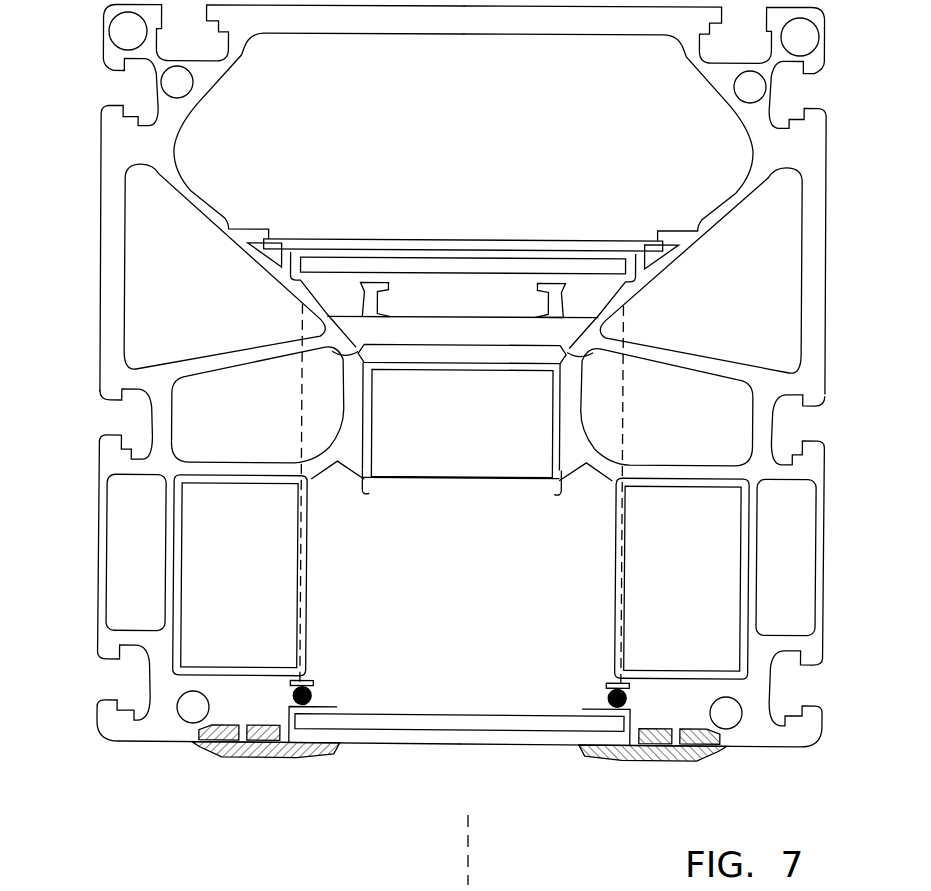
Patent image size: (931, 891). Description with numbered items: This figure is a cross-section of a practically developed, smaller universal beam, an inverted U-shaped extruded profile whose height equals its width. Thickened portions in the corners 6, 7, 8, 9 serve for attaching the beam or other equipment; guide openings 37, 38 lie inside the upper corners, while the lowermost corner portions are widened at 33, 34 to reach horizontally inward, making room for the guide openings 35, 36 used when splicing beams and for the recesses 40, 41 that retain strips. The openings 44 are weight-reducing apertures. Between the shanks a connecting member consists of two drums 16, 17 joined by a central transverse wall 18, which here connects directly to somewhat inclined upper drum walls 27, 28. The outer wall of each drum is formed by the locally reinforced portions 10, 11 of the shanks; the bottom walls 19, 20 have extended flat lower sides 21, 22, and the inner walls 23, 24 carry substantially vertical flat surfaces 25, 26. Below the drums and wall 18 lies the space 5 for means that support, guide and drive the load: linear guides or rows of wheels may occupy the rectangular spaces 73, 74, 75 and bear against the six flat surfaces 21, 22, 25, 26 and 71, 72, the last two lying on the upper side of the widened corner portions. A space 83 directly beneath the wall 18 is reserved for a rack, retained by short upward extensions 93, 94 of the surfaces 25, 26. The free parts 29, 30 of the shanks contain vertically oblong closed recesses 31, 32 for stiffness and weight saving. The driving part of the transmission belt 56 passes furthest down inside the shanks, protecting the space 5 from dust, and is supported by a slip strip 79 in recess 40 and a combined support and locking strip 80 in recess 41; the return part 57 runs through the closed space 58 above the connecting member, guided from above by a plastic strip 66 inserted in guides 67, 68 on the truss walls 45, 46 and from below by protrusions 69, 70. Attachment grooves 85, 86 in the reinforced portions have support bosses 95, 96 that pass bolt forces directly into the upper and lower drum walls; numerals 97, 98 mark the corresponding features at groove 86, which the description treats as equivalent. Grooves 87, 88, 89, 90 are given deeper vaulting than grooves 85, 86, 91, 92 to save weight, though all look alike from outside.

The space 5 is at (465, 595).
The thickened corner portion 6 is at (210, 710).
The thickened corner portion 7 is at (715, 710).
The thickened corner portion 8 is at (100, 50).
The thickened corner portion 9 is at (830, 60).
The locally reinforced portion 10 is at (172, 441).
The locally reinforced portion 11 is at (753, 442).
The drum 16 is at (257, 404).
The drum 17 is at (666, 407).
The central transverse wall 18 is at (437, 330).
The bottom wall 19 is at (238, 462).
The bottom wall 20 is at (645, 464).
The lower side 21 is at (279, 492).
The lower side 22 is at (643, 492).
The inner wall 23 is at (343, 432).
The inner wall 24 is at (572, 422).
The vertical flat surface 25 is at (380, 486).
The vertical flat surface 26 is at (539, 487).
The upper wall 27 is at (234, 352).
The upper wall 28 is at (685, 352).
The free part of shank 29 is at (108, 562).
The free part of shank 30 is at (760, 586).
The closed recess 31 is at (136, 552).
The closed recess 32 is at (786, 557).
The widened portion 33 is at (318, 683).
The widened portion 34 is at (608, 683).
The guide opening 35 is at (193, 707).
The guide opening 36 is at (726, 713).
The guide opening 37 is at (177, 82).
The guide opening 38 is at (750, 87).
The recess 40 is at (314, 697).
The recess 41 is at (262, 750).
The weight-reducing aperture 44 is at (464, 34).
The truss wall 45 is at (212, 208).
The truss wall 46 is at (718, 208).
The driving part of transmission belt 56 is at (459, 725).
The return part of transmission belt 57 is at (463, 267).
The closed space 58 is at (464, 137).
The plastic strip 66 is at (475, 240).
The guide 67 is at (256, 253).
The guide 68 is at (668, 258).
The protrusion 69 is at (380, 302).
The protrusion 70 is at (552, 302).
The guiding and support surface 71 is at (312, 681).
The guiding and support surface 72 is at (606, 681).
The rectangular space 73 is at (240, 575).
The rectangular space 74 is at (682, 578).
The rectangular space 75 is at (461, 420).
The slip strip 79 is at (340, 709).
The combined support and locking strip 80 is at (280, 757).
The space 83 is at (462, 353).
The attachment groove 85 is at (126, 427).
The attachment groove 86 is at (796, 427).
The groove 87 is at (128, 94).
The groove 88 is at (796, 94).
The groove 89 is at (191, 34).
The groove 90 is at (734, 34).
The groove 91 is at (126, 685).
The groove 92 is at (796, 685).
The upward extension 93 is at (352, 357).
The upward extension 94 is at (580, 357).
The support boss 95 is at (102, 412).
The support boss 96 is at (102, 437).
The right slot upper lip 97 is at (823, 407).
The right slot lower lip 98 is at (823, 445).